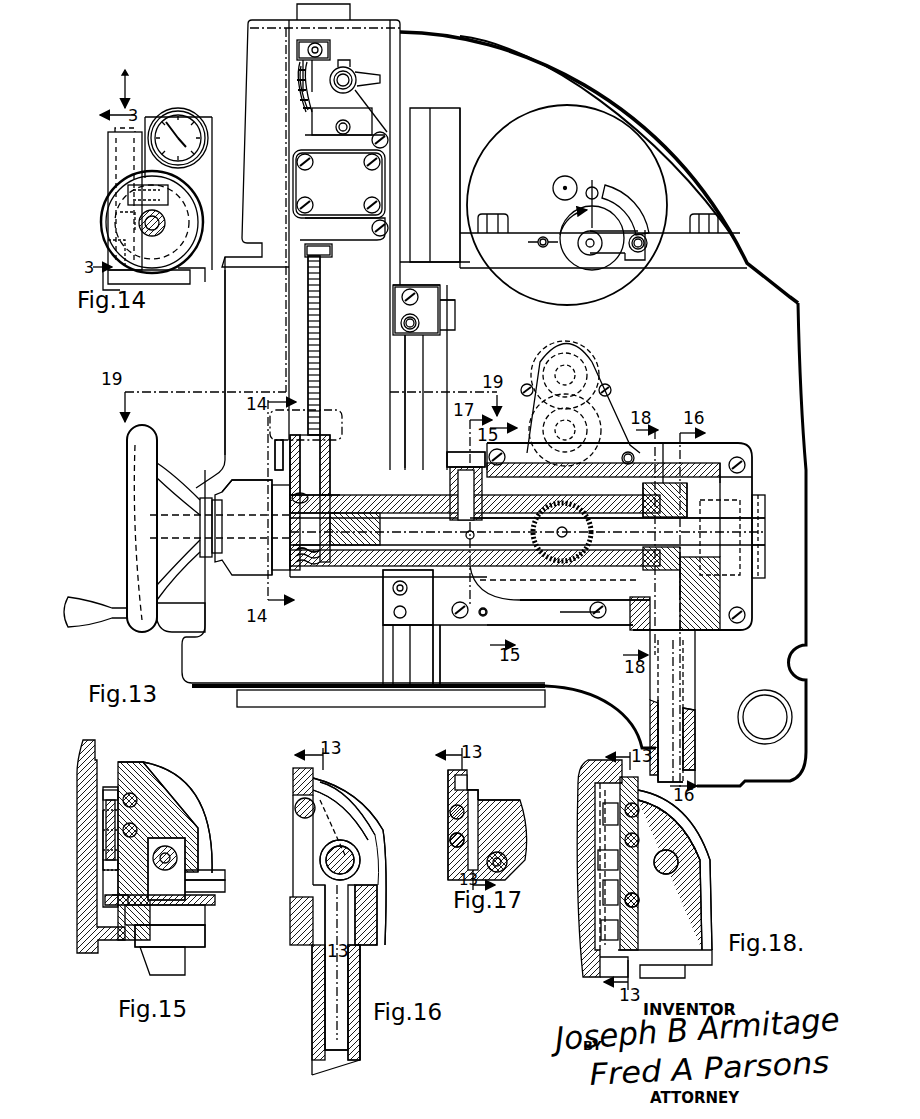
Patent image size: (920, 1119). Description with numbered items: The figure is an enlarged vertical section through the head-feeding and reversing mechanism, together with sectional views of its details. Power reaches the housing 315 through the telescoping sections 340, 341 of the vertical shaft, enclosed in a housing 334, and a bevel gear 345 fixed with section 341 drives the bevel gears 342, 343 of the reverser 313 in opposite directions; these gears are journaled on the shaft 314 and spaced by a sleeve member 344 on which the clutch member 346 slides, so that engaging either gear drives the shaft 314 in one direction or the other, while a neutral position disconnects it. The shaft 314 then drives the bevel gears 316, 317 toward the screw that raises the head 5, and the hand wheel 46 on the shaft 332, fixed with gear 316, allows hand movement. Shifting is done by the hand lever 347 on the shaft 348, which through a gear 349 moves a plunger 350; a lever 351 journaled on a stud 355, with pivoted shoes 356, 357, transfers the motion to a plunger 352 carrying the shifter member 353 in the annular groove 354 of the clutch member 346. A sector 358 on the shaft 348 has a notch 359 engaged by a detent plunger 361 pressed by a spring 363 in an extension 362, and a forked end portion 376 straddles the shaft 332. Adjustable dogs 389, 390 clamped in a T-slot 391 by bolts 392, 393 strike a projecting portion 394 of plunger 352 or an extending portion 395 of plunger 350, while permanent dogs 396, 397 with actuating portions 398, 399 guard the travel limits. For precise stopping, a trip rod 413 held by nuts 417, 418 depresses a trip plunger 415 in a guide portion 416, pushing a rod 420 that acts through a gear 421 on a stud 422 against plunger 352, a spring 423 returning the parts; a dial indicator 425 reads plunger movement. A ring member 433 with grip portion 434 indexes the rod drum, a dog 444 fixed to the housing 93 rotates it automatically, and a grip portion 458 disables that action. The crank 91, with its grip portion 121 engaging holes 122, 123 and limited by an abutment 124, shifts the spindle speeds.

In FIG. 13, the head 5 is at (225, 330).
In FIG. 13, the hand wheel 46 is at (135, 442).
In FIG. 13, the crank 91 is at (618, 226).
In FIG. 13, the housing 93 is at (563, 82).
In FIG. 13, the grip portion 121 is at (645, 242).
In FIG. 13, the hole 122 is at (540, 246).
In FIG. 13, the hole 123 is at (598, 190).
In FIG. 13, the abutment 124 is at (620, 190).
In FIG. 13, the reverser 313 is at (665, 450).
In FIG. 13, the shaft 314 is at (611, 533).
In FIG. 16, the shaft 314 is at (360, 868).
In FIG. 13, the housing 315 is at (562, 630).
In FIG. 15, the housing 315 is at (205, 840).
In FIG. 16, the housing 315 is at (318, 778).
In FIG. 18, the housing 315 is at (695, 840).
In FIG. 13, the bevel gear 316 is at (542, 614).
In FIG. 13, the bevel gear 317 is at (585, 590).
In FIG. 13, the shaft 332 is at (255, 518).
In FIG. 15, the shaft 332 is at (186, 858).
In FIG. 13, the housing 334 is at (697, 722).
In FIG. 16, the housing 334 is at (360, 988).
In FIG. 13, the telescoping section 340 is at (700, 786).
In FIG. 13, the telescoping section 341 is at (697, 708).
In FIG. 16, the telescoping section 341 is at (360, 975).
In FIG. 13, the bevel gear 342 is at (643, 478).
In FIG. 13, the bevel gear 343 is at (720, 470).
In FIG. 13, the sleeve member 344 is at (755, 528).
In FIG. 13, the bevel gear 345 is at (725, 588).
In FIG. 16, the bevel gear 345 is at (370, 886).
In FIG. 13, the clutch member 346 is at (755, 540).
In FIG. 15, the hand lever 347 is at (226, 876).
In FIG. 13, the shaft 348 is at (502, 618).
In FIG. 15, the shaft 348 is at (226, 892).
In FIG. 15, the gear 349 is at (109, 911).
In FIG. 13, the plunger 350 is at (575, 614).
In FIG. 15, the plunger 350 is at (135, 930).
In FIG. 18, the plunger 350 is at (645, 905).
In FIG. 18, the lever 351 is at (603, 892).
In FIG. 13, the plunger 352 is at (622, 462).
In FIG. 15, the plunger 352 is at (143, 770).
In FIG. 16, the plunger 352 is at (330, 790).
In FIG. 17, the plunger 352 is at (448, 800).
In FIG. 18, the plunger 352 is at (662, 800).
In FIG. 13, the shifter member 353 is at (697, 478).
In FIG. 16, the shifter member 353 is at (335, 815).
In FIG. 16, the annular groove 354 is at (362, 855).
In FIG. 18, the stud 355 is at (598, 860).
In FIG. 18, the pivoted shoe 356 is at (601, 932).
In FIG. 18, the pivoted shoe 357 is at (603, 810).
In FIG. 15, the sector 358 is at (106, 862).
In FIG. 13, the notch 359 is at (466, 536).
In FIG. 15, the detent plunger 361 is at (103, 836).
In FIG. 15, the extension 362 is at (103, 797).
In FIG. 15, the spring 363 is at (148, 792).
In FIG. 15, the forked end portion 376 is at (182, 822).
In FIG. 13, the dog 389 is at (393, 312).
In FIG. 13, the dog 390 is at (393, 586).
In FIG. 13, the T-slot 391 is at (405, 372).
In FIG. 13, the bolt 392 is at (395, 326).
In FIG. 13, the bolt 393 is at (392, 605).
In FIG. 13, the projecting portion 394 is at (450, 472).
In FIG. 13, the extending portion 395 is at (436, 628).
In FIG. 13, the permanent dog 396 is at (393, 290).
In FIG. 13, the permanent dog 397 is at (393, 620).
In FIG. 13, the actuating portion 398 is at (440, 318).
In FIG. 13, the actuating portion 399 is at (442, 630).
In FIG. 13, the trip rod 413 is at (320, 343).
In FIG. 13, the trip plunger 415 is at (313, 445).
In FIG. 13, the guide portion 416 is at (322, 470).
In FIG. 13, the adjusting nut 417 is at (332, 250).
In FIG. 13, the adjusting nut 418 is at (355, 108).
In FIG. 13, the rod 420 is at (312, 510).
In FIG. 17, the rod 420 is at (455, 845).
In FIG. 17, the sleeve or gear 421 is at (492, 812).
In FIG. 17, the stud 422 is at (472, 795).
In FIG. 13, the spring 423 is at (312, 580).
In FIG. 13, the dial indicator 425 is at (272, 445).
In FIG. 13, the ring member 433 is at (300, 114).
In FIG. 13, the grip portion 434 is at (350, 127).
In FIG. 13, the dog 444 is at (297, 50).
In FIG. 13, the grip portion 458 is at (372, 77).